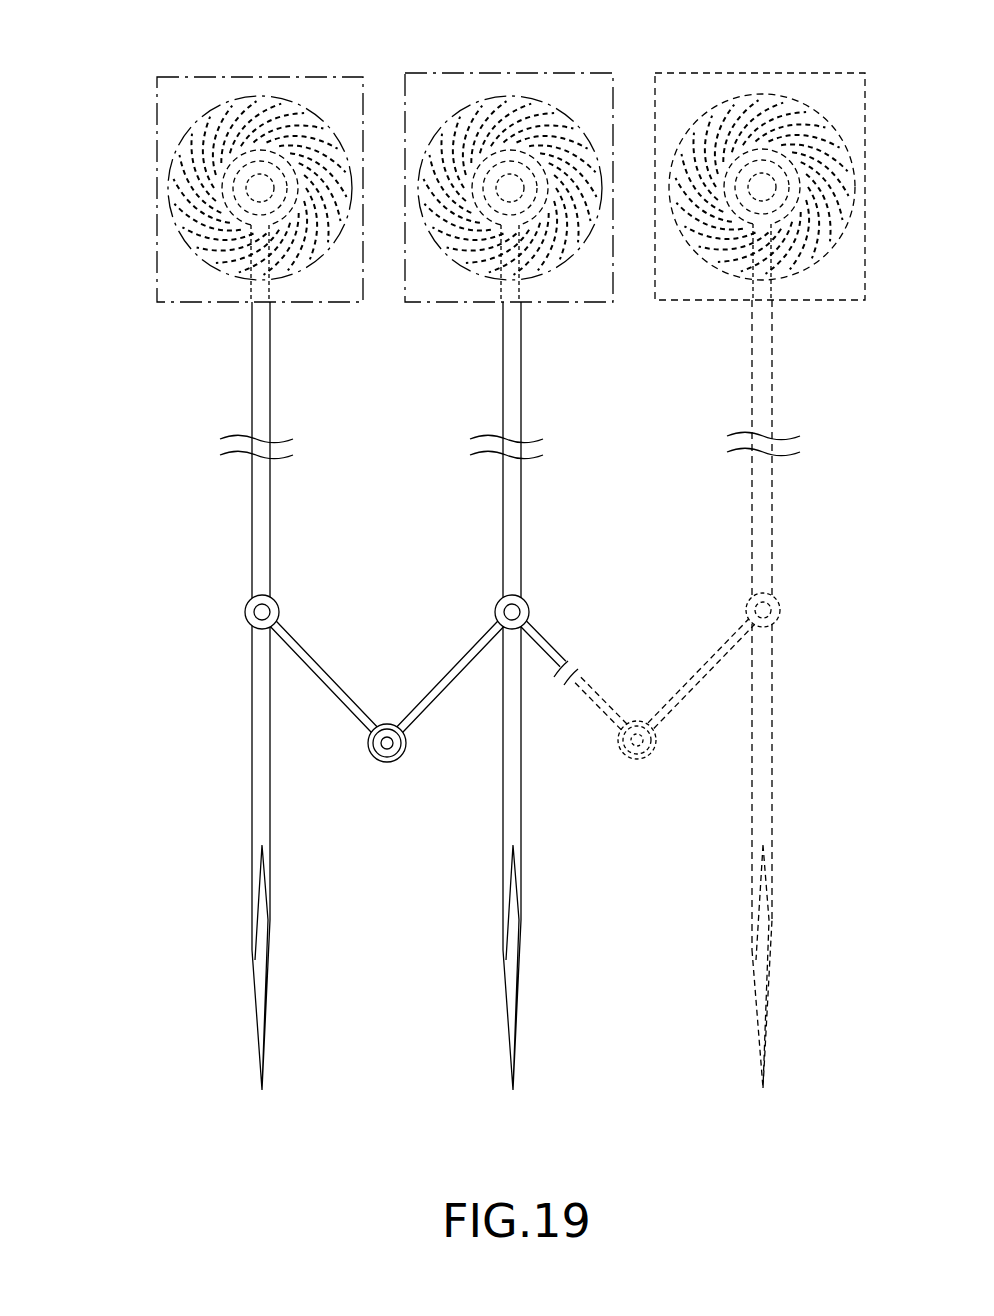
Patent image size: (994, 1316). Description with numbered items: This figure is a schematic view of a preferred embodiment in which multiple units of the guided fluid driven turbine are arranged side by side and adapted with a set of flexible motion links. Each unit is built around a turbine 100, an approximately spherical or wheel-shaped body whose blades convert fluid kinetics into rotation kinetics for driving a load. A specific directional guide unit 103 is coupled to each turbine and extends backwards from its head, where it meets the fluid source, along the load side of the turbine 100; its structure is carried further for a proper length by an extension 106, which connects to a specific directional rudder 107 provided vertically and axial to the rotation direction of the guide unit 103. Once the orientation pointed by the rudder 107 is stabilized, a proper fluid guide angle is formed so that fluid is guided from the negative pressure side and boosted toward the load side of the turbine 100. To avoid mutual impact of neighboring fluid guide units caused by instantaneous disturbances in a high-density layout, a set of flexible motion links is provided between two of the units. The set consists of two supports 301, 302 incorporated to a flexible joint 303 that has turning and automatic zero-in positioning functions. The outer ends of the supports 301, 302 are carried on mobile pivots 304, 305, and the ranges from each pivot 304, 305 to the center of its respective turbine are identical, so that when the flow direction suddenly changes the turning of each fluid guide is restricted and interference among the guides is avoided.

The turbine 100 is at (168, 190).
The specific directional guide unit 103 is at (157, 268).
The extension 106 is at (257, 521).
The specific directional rudder 107 is at (255, 970).
The support 301 is at (297, 640).
The support 302 is at (430, 710).
The flexible joint 303 is at (387, 762).
The mobile pivot 304 is at (245, 612).
The mobile pivot 305 is at (495, 612).